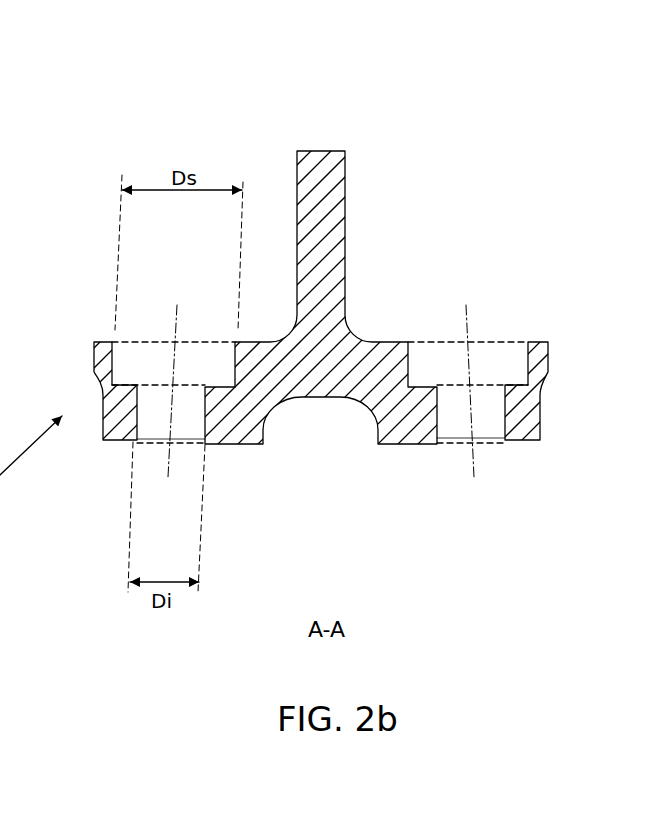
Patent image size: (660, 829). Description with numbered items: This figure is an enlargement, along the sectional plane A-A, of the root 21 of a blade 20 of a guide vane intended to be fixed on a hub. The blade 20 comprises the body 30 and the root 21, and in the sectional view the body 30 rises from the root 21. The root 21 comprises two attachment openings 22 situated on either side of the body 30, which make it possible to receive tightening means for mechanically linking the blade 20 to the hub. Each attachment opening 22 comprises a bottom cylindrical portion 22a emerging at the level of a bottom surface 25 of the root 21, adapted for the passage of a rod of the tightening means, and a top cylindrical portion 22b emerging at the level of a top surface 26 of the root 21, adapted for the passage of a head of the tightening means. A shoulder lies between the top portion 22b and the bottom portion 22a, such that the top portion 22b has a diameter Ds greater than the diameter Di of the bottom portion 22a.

The blade 20 is at (373, 138).
The root 21 is at (549, 372).
The attachment opening 22 is at (160, 320).
The bottom cylindrical portion 22a is at (161, 423).
The top cylindrical portion 22b is at (144, 362).
The bottom surface 25 is at (252, 449).
The top surface 26 is at (377, 340).
The body 30 is at (315, 158).